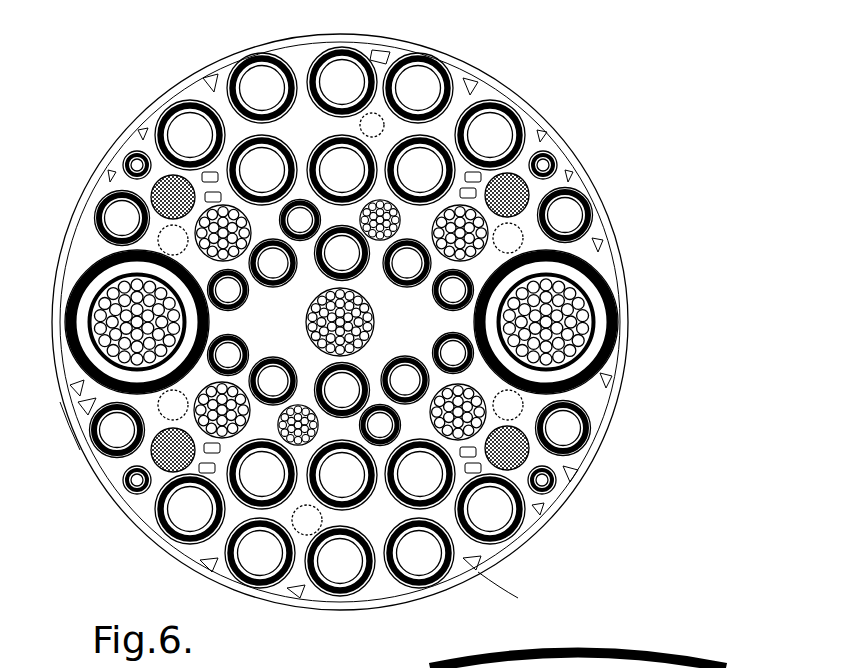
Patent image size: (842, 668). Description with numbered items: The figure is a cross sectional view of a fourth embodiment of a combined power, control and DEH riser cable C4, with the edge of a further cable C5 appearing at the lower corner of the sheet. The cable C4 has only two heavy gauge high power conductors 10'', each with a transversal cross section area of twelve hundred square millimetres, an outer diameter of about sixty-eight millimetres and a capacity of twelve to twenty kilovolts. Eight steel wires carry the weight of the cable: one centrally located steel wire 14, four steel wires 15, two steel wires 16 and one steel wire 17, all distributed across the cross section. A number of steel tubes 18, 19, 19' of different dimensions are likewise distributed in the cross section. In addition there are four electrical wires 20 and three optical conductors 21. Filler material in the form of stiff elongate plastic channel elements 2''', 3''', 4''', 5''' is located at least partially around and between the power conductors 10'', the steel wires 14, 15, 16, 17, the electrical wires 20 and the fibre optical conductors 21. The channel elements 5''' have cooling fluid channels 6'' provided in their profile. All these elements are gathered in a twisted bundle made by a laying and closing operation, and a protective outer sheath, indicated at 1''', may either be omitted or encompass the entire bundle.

The outer sheath 1''' is at (370, 322).
The channel element 2''' is at (374, 322).
The channel element 3''' is at (527, 578).
The channel element 4''' is at (74, 473).
The channel element 5''' is at (536, 553).
The cooling fluid channel 6'' is at (487, 520).
The high power conductor 10'' is at (584, 322).
The steel wire 14 is at (497, 397).
The steel wire 15 is at (530, 247).
The steel wire 16 is at (385, 222).
The steel wire 17 is at (557, 482).
The steel tube 18 is at (502, 127).
The steel tube 19 is at (467, 347).
The steel tube 19' is at (525, 358).
The electrical wire 20 is at (528, 196).
The optical conductor 21 is at (558, 166).
The combined power, control and DEH riser cable C4 is at (128, 110).
The riser cable C5 is at (708, 667).